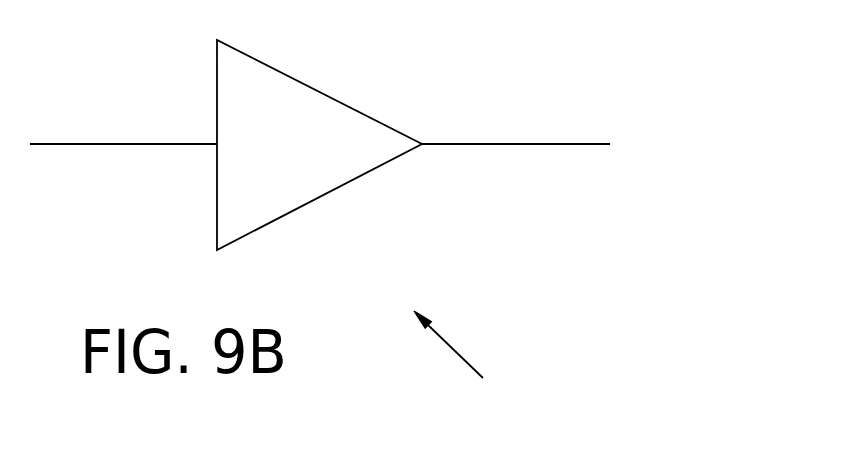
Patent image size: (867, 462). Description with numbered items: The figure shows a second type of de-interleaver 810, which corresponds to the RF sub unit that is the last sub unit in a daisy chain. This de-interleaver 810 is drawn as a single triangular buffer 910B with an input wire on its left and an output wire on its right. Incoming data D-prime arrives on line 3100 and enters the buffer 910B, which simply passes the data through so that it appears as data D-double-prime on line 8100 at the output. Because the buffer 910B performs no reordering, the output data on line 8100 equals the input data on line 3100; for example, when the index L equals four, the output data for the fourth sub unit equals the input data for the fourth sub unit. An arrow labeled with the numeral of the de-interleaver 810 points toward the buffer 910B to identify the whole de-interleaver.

The line 3100 is at (123, 151).
The line 8100 is at (516, 151).
The buffer 910B is at (319, 164).
The de-interleaver 810 is at (478, 344).